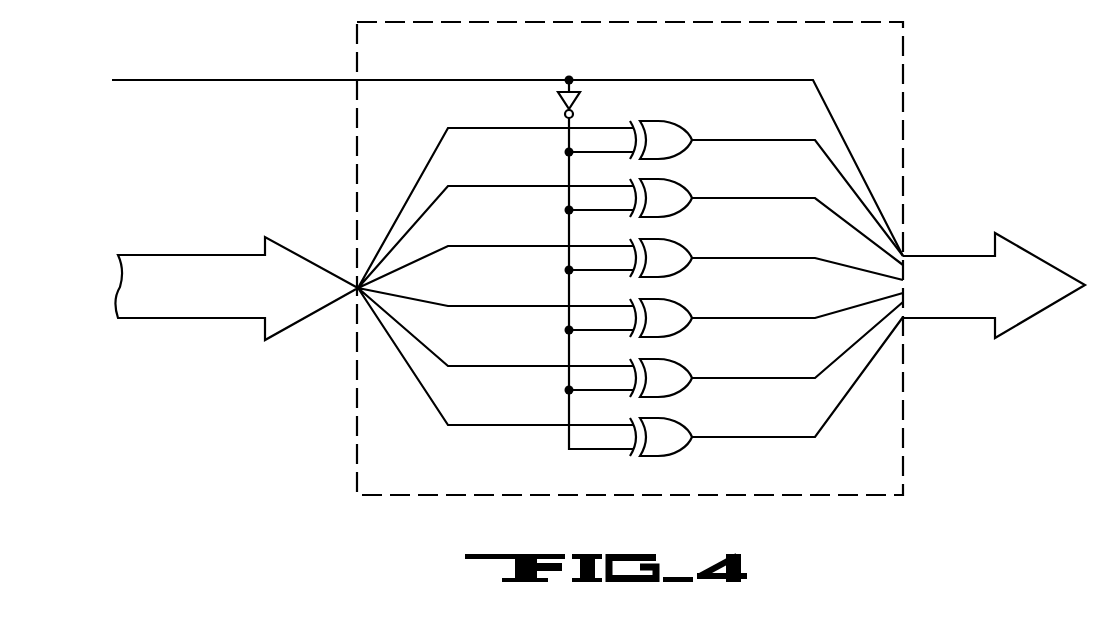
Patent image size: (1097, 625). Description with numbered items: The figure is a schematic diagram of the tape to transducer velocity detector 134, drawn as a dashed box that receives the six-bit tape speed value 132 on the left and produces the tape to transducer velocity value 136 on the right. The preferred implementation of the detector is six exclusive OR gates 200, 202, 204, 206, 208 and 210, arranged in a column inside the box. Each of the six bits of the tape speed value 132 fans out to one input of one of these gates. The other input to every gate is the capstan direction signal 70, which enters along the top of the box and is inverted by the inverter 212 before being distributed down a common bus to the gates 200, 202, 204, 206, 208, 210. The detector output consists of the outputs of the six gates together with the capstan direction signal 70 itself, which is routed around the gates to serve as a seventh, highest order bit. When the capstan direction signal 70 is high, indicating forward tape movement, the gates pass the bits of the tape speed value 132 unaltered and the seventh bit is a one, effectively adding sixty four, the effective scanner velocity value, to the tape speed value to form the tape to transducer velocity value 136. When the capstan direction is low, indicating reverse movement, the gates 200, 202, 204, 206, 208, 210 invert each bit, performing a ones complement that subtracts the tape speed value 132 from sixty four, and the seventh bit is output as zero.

The capstan direction signal 70 is at (311, 79).
The tape speed value 132 is at (190, 255).
The tape to transducer velocity detector 134 is at (903, 70).
The tape to transducer velocity value 136 is at (948, 256).
The exclusive OR gate 200 is at (680, 123).
The exclusive OR gate 202 is at (680, 182).
The exclusive OR gate 204 is at (680, 241).
The exclusive OR gate 206 is at (680, 301).
The exclusive OR gate 208 is at (680, 361).
The exclusive OR gate 210 is at (680, 420).
The inverter 212 is at (583, 100).